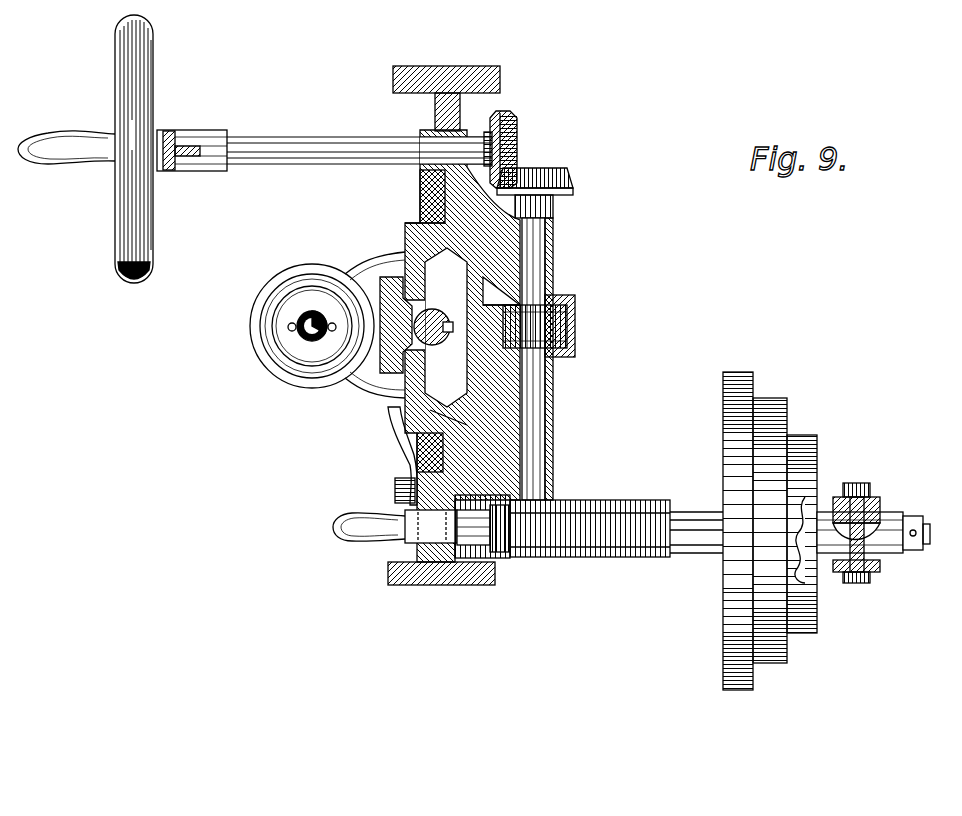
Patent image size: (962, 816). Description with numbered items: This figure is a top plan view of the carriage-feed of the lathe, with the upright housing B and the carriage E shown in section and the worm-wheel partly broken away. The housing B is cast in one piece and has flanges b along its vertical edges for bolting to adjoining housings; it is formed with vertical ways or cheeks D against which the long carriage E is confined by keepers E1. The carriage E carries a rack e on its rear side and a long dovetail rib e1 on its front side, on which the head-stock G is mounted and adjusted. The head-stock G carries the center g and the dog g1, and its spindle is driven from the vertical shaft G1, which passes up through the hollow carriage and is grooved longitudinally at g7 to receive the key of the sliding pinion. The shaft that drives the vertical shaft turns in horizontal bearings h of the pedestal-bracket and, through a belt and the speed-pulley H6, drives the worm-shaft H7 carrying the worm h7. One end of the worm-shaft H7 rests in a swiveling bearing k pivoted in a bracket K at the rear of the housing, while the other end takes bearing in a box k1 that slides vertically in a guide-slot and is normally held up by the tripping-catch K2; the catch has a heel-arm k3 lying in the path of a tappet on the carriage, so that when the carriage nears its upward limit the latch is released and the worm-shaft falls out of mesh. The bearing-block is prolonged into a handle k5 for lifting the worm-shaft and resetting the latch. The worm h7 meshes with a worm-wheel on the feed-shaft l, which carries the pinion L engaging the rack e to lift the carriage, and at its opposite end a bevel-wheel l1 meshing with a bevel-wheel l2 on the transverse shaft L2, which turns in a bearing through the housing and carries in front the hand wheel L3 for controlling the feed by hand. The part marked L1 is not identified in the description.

The hand wheel L3 is at (134, 149).
The transverse shaft L2 is at (324, 144).
The flanges b is at (444, 326).
The vertical ways or cheeks D is at (462, 346).
The upright housing B is at (465, 467).
The carriage E is at (436, 200).
The keepers E1 is at (430, 452).
The horizontal bearings h is at (451, 421).
The bevel-wheel l2 is at (508, 145).
The bevel-wheel l1 is at (575, 192).
The feed-shaft l is at (548, 359).
The collar L1 is at (535, 326).
The rack e is at (501, 324).
The vertical shaft G1 is at (434, 316).
The longitudinal groove g7 is at (448, 338).
The dovetail rib or bar e1 is at (396, 325).
The head-stock G is at (327, 325).
The center g is at (312, 318).
The dog g1 is at (326, 338).
The heel-arm k3 is at (396, 416).
The tripping-catch K2 is at (396, 489).
The box k1 is at (431, 526).
The handle k5 is at (345, 516).
The bracket K is at (405, 547).
The worm h7 is at (527, 558).
The pinion L is at (583, 520).
The speed-pulley H6 is at (770, 531).
The worm-shaft H7 is at (690, 540).
The swiveling bearing k is at (880, 512).